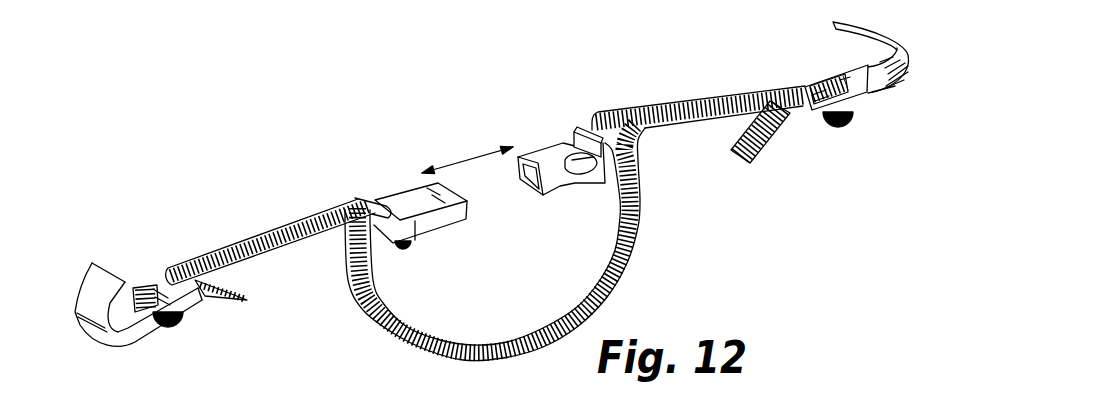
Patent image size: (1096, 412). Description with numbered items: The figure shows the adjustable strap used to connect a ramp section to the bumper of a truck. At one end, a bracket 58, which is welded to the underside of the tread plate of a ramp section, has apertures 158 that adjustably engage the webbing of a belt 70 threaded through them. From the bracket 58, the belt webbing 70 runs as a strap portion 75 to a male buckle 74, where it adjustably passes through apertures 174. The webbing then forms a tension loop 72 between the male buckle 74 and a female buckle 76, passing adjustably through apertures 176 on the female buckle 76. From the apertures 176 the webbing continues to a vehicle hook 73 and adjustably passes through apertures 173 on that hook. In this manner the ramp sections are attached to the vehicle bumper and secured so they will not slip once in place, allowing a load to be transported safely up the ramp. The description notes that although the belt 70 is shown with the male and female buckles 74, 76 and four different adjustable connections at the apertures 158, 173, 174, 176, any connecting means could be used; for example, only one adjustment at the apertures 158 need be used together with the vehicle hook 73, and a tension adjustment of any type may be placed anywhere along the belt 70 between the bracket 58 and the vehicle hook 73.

The bracket 58 is at (82, 263).
The apertures 158 is at (163, 275).
The strap 75 is at (263, 233).
The apertures 174 is at (377, 197).
The male buckle 74 is at (418, 183).
The female buckle 76 is at (528, 150).
The apertures 176 is at (577, 130).
The tension loop 72 is at (550, 313).
The apertures 173 is at (806, 90).
The vehicle hook 73 is at (897, 97).
The belt 70 is at (738, 261).